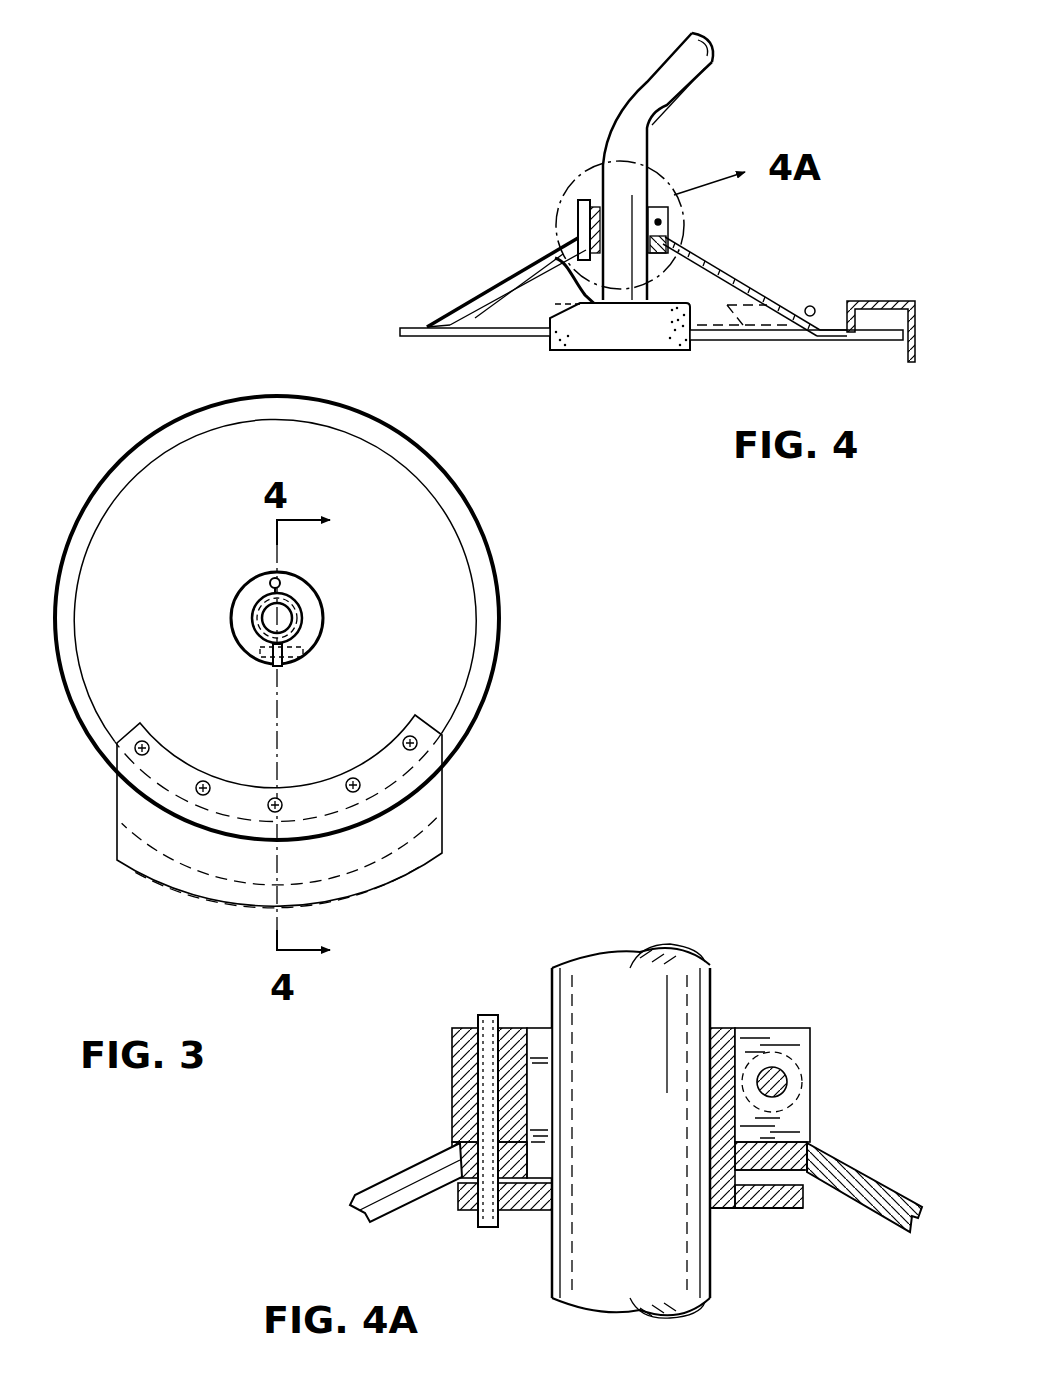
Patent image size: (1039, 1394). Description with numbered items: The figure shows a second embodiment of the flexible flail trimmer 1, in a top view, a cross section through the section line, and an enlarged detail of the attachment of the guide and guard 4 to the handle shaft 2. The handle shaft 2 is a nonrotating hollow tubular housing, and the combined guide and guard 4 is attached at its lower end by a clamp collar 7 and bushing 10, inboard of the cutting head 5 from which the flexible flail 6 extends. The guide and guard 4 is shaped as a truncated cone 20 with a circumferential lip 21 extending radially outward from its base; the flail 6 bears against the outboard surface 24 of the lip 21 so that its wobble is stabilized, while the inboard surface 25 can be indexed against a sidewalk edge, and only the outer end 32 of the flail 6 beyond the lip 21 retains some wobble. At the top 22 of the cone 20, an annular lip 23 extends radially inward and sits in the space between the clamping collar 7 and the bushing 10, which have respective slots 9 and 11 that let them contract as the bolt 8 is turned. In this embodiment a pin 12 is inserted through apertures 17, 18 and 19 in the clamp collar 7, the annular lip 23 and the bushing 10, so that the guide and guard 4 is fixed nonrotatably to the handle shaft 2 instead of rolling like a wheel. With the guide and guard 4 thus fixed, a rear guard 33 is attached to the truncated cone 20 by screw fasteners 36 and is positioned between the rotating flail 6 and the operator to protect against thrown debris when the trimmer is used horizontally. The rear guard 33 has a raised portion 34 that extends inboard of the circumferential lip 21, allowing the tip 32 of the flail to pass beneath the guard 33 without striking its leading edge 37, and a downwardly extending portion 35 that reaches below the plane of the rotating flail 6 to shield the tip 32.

In FIG. 4, the flexible flail trimmer 1 is at (500, 182).
In FIG. 3, the flexible flail trimmer 1 is at (135, 420).
In FIG. 4, the handle shaft 2 is at (650, 78).
In FIG. 3, the handle shaft 2 is at (302, 605).
In FIG. 4A, the handle shaft 2 is at (713, 988).
In FIG. 4, the guide and guard 4 is at (492, 285).
In FIG. 3, the guide and guard 4 is at (505, 566).
In FIG. 4A, the guide and guard 4 is at (402, 1170).
In FIG. 4, the cutting head 5 is at (622, 352).
In FIG. 4, the flexible flail 6 is at (752, 341).
In FIG. 4, the clamp collar 7 is at (660, 208).
In FIG. 3, the clamp collar 7 is at (235, 642).
In FIG. 4A, the clamp collar 7 is at (795, 1020).
In FIG. 3, the bolt 8 is at (300, 626).
In FIG. 4A, the bolt 8 is at (790, 1078).
In FIG. 3, the slot 9 is at (283, 668).
In FIG. 4A, the slot 9 is at (752, 1032).
In FIG. 4, the bushing 10 is at (700, 268).
In FIG. 3, the bushing 10 is at (247, 612).
In FIG. 4A, the bushing 10 is at (755, 1210).
In FIG. 3, the slot 11 is at (295, 593).
In FIG. 4A, the slot 11 is at (538, 1030).
In FIG. 4, the pin 12 is at (583, 200).
In FIG. 4A, the pin 12 is at (490, 1015).
In FIG. 4A, the aperture 17 is at (480, 1072).
In FIG. 4A, the aperture 18 is at (478, 1160).
In FIG. 4A, the aperture 19 is at (466, 1212).
In FIG. 4, the truncated cone 20 is at (762, 282).
In FIG. 3, the truncated cone 20 is at (418, 680).
In FIG. 4A, the truncated cone 20 is at (893, 1180).
In FIG. 4, the circumferential lip 21 is at (400, 331).
In FIG. 3, the circumferential lip 21 is at (497, 686).
In FIG. 4A, the top of cone 22 is at (815, 1142).
In FIG. 4A, the annular lip 23 is at (777, 1150).
In FIG. 4, the outboard surface 24 is at (414, 336).
In FIG. 4, the inboard surface 25 is at (414, 325).
In FIG. 3, the inboard surface 25 is at (470, 530).
In FIG. 4, the outer end of flail 32 is at (898, 343).
In FIG. 4, the rear guard 33 is at (908, 268).
In FIG. 3, the rear guard 33 is at (175, 895).
In FIG. 4, the raised portion 34 is at (878, 302).
In FIG. 3, the raised portion 34 is at (406, 850).
In FIG. 4, the downwardly extending portion 35 is at (925, 352).
In FIG. 3, the downwardly extending portion 35 is at (445, 850).
In FIG. 4, the screw fasteners 36 is at (810, 306).
In FIG. 3, the screw fasteners 36 is at (150, 748).
In FIG. 3, the leading edge 37 is at (445, 808).